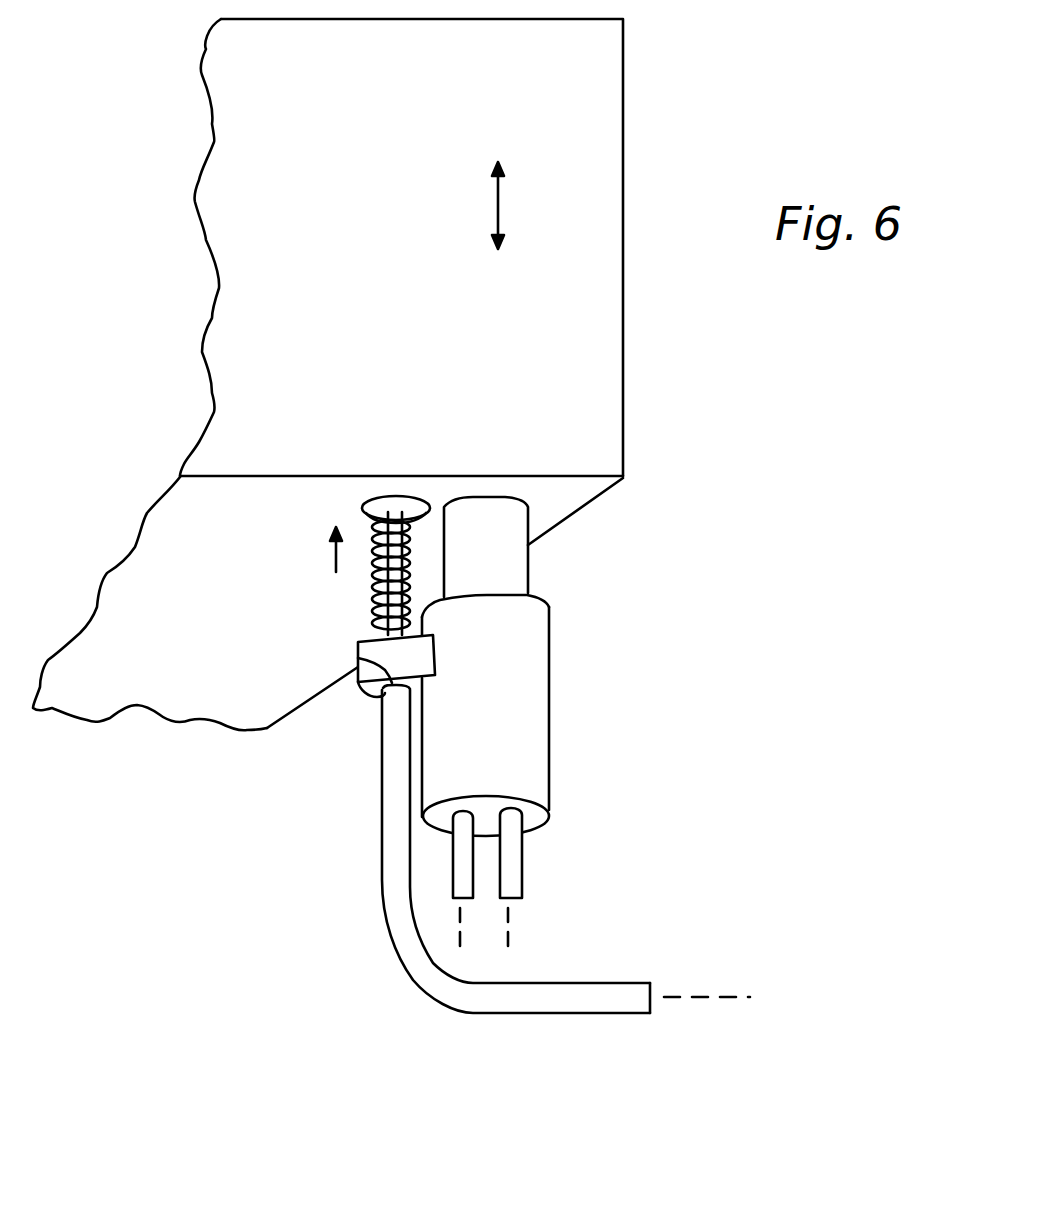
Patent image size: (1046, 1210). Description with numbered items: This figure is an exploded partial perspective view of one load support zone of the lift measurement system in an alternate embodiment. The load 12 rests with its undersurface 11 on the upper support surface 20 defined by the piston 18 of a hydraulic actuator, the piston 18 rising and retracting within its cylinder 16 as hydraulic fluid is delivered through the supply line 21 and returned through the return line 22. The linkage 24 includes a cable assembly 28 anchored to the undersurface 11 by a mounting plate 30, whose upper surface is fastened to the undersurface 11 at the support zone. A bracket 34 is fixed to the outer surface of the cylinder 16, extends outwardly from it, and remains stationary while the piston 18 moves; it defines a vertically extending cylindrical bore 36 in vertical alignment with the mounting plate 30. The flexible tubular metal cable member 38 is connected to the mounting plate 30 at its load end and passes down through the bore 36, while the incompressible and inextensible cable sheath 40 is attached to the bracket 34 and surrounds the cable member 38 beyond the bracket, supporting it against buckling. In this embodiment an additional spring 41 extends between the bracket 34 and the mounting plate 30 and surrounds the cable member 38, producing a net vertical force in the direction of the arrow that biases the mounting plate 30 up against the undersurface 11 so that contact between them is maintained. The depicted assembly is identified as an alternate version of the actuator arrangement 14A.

The undersurface 11 is at (193, 550).
The load 12 is at (624, 110).
The plug assembly 14A is at (551, 650).
The cylinder 16 is at (550, 700).
The piston 18 is at (530, 522).
The upper support surface 20 is at (492, 497).
The supply line 21 is at (452, 873).
The return line 22 is at (523, 862).
The linkage 24 is at (369, 584).
The cable assembly 28 is at (553, 1018).
The mounting plate 30 is at (382, 500).
The bracket 34 is at (358, 682).
The cylindrical bore 36 is at (358, 650).
The cable member 38 is at (407, 598).
The cable sheath 40 is at (377, 790).
The spring 41 is at (377, 617).